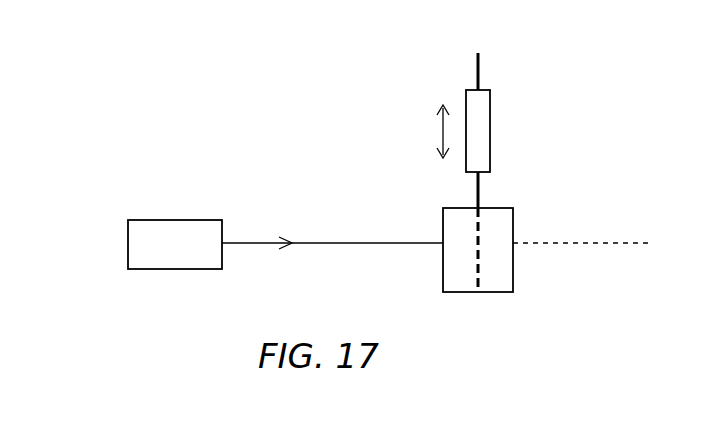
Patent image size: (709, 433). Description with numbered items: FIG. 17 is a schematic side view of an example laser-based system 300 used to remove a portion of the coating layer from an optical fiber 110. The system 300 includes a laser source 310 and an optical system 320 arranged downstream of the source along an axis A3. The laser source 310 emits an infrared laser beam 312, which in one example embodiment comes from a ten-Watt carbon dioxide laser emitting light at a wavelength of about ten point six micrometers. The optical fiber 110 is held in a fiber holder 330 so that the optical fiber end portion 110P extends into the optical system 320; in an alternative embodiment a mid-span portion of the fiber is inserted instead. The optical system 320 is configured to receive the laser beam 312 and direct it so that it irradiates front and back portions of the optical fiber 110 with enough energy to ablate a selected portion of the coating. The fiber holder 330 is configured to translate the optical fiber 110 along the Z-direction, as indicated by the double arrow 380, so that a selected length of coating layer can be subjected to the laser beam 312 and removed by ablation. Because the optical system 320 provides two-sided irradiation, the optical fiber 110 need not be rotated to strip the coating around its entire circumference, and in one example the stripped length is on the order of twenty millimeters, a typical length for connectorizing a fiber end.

The laser-based system 300 is at (163, 115).
The laser source 310 is at (178, 223).
The infrared laser beam 312 is at (330, 243).
The optical system 320 is at (510, 232).
The fiber holder 330 is at (490, 117).
The double arrow 380 is at (442, 133).
The optical fiber 110 is at (478, 67).
The optical fiber end portion 110P is at (480, 257).
The axis A3 is at (635, 243).